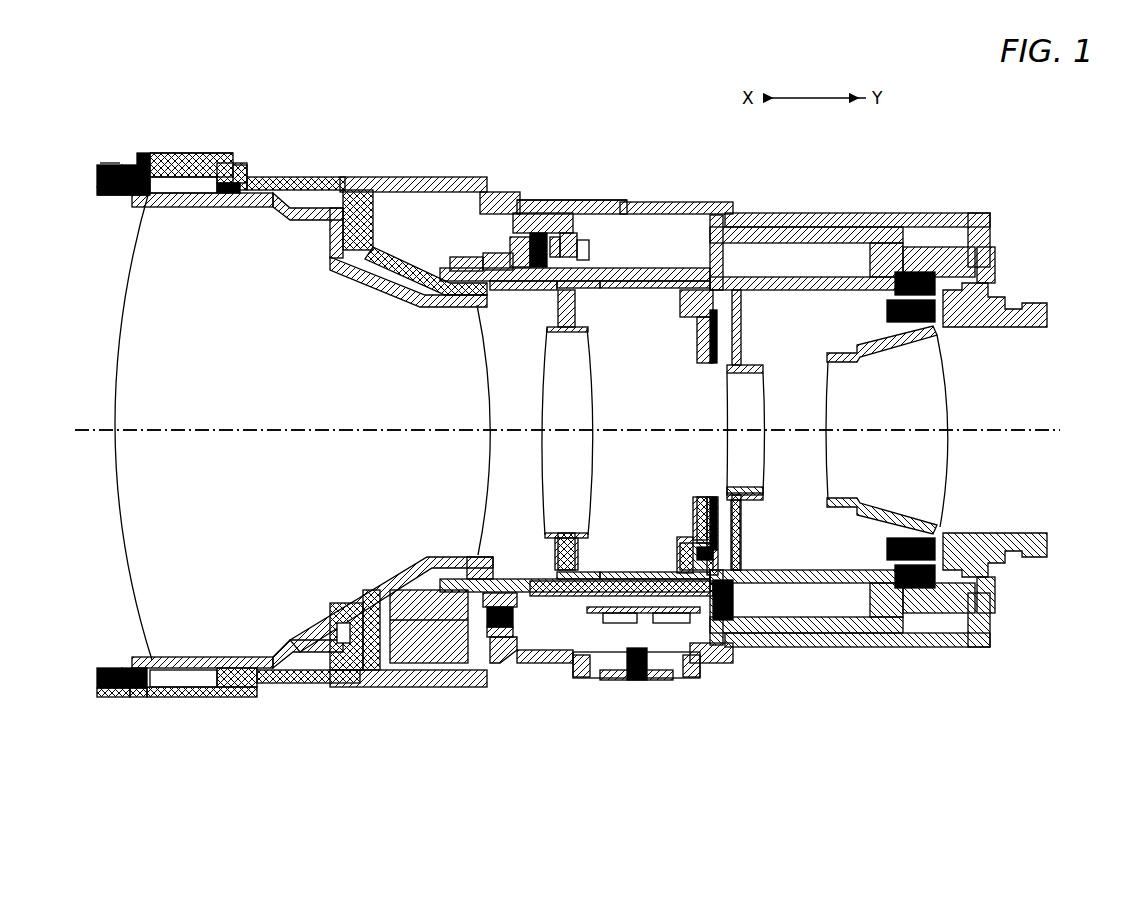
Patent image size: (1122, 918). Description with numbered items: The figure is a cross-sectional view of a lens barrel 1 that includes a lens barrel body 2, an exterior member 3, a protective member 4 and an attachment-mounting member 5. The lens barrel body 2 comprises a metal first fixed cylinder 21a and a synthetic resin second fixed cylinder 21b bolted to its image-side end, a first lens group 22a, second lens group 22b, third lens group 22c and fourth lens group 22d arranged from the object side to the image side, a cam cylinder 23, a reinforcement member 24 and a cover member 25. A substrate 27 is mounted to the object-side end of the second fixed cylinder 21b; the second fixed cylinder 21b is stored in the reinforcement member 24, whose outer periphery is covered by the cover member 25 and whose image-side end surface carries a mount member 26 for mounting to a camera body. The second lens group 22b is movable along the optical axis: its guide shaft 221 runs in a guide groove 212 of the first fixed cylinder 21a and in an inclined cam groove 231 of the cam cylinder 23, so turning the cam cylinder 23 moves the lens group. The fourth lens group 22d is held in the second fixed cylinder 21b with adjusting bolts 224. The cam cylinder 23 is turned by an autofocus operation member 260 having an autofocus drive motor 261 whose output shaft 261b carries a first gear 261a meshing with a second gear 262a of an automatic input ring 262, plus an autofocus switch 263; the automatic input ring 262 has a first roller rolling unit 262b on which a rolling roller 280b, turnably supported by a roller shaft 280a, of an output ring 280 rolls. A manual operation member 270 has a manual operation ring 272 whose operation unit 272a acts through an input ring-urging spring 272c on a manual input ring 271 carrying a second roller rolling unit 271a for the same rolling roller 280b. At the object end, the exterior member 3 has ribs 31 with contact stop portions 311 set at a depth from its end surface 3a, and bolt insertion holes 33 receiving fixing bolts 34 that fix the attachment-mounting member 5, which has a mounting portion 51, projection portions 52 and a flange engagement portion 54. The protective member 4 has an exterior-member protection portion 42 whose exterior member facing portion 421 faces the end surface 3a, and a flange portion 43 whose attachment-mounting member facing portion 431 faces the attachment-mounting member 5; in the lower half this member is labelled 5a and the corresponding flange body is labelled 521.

The lens barrel 1 is at (920, 148).
The lens barrel body 2 is at (729, 204).
The exterior member 3 is at (266, 177).
The axial end surface 3a is at (97, 697).
The protective member 4 is at (100, 175).
The attachment-mounting member 5 is at (100, 193).
The decorative ring lower portion 5a is at (140, 697).
The first fixed cylinder 21a is at (690, 268).
The second fixed cylinder 21b is at (800, 276).
The first lens group 22a is at (135, 583).
The second lens group 22b is at (592, 475).
The third lens group 22c is at (766, 445).
The fourth lens group 22d is at (828, 483).
The cam cylinder 23 is at (665, 270).
The reinforcement member 24 is at (850, 228).
The cover member 25 is at (940, 214).
The mount member 26 is at (1000, 268).
The substrate 27 is at (700, 614).
The rib 31 is at (200, 207).
The bolt insertion hole 33 is at (112, 165).
The fixing bolt 34 is at (130, 165).
The exterior-member protection portion 42 is at (103, 690).
The flange portion 43 is at (170, 697).
The mounting portion 51 is at (115, 197).
The projection portion 52 is at (143, 158).
The flange engagement portion 54 is at (155, 185).
The guide groove 212 is at (635, 285).
The guide shaft 221 is at (552, 305).
The adjusting bolt 224 is at (895, 300).
The cam groove 231 is at (600, 290).
The autofocus operation member 260 is at (645, 748).
The autofocus drive motor 261 is at (450, 665).
The first gear 261a is at (485, 552).
The output shaft 261b is at (467, 557).
The automatic input ring 262 is at (530, 640).
The second gear 262a is at (500, 637).
The first roller rolling unit 262b is at (510, 245).
The autofocus switch 263 is at (622, 682).
The manual operation member 270 is at (398, 175).
The manual input ring 271 is at (557, 236).
The second roller rolling unit 271a is at (566, 232).
The manual operation ring 272 is at (408, 177).
The operation unit 272a is at (622, 268).
The input ring-urging spring 272c is at (590, 200).
The output ring 280 is at (590, 258).
The roller shaft 280a is at (535, 232).
The rolling roller 280b is at (520, 235).
The contact stop portion 311 is at (165, 157).
The exterior member facing portion 421 is at (118, 690).
The attachment-mounting member facing portion 431 is at (180, 683).
The flange body 521 is at (200, 160).